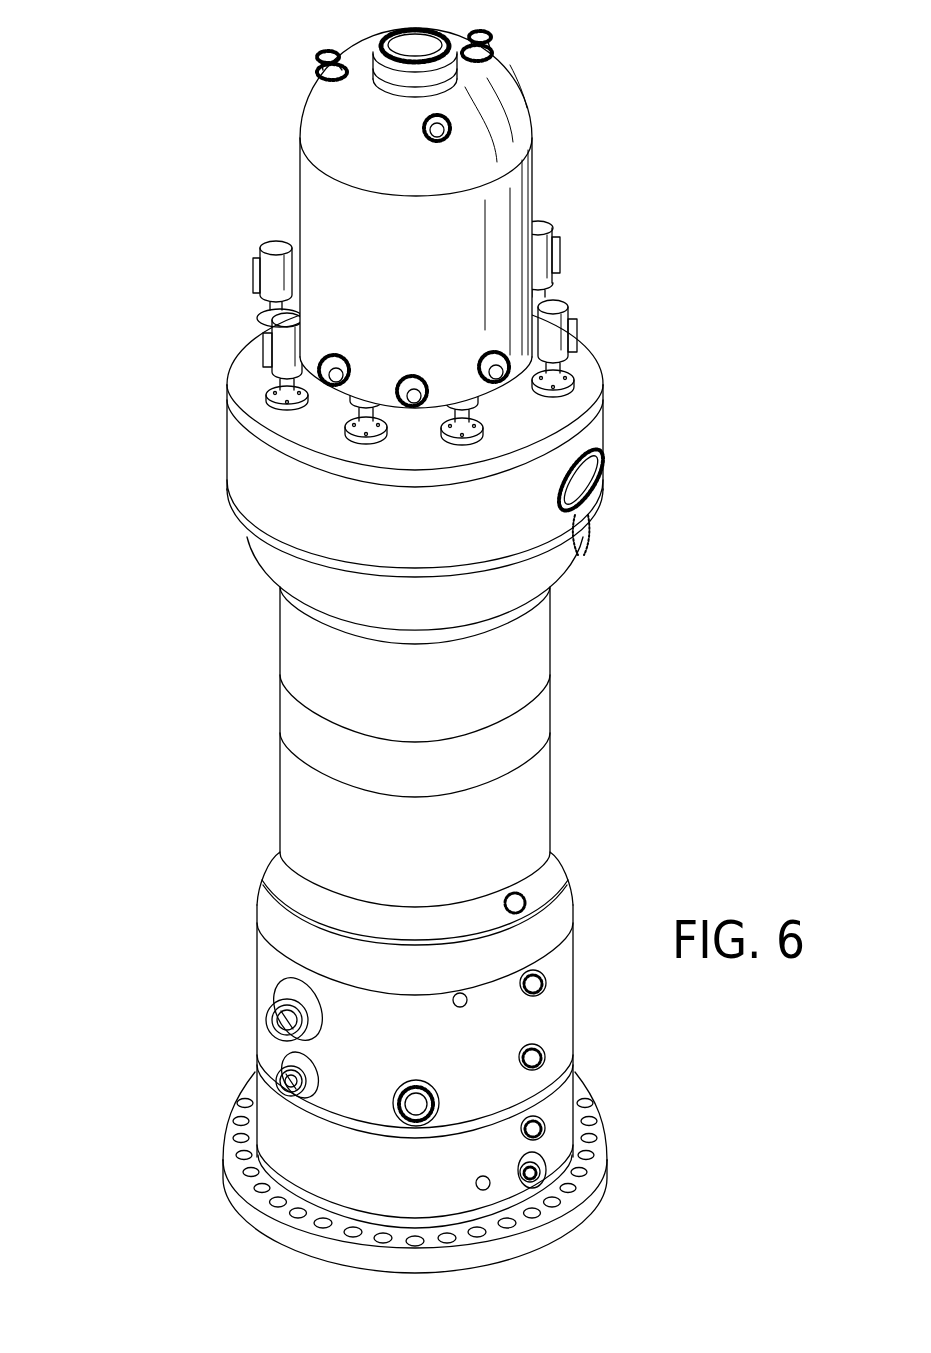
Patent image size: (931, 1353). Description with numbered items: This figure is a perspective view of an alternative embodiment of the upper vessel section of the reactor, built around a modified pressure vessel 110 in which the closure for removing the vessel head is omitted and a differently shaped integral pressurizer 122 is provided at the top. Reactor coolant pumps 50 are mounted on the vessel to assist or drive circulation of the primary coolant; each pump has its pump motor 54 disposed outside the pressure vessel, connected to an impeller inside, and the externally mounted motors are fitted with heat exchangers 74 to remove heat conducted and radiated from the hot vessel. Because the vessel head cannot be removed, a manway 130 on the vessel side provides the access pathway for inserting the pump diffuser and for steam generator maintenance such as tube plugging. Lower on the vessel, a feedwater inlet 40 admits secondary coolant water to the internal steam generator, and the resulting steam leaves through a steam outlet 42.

The reactor coolant pump 50 is at (263, 237).
The integral pressurizer 122 is at (312, 178).
The pump motor 54 is at (357, 427).
The heat exchanger 74 is at (578, 340).
The manway 130 is at (602, 495).
The modified pressure vessel 110 is at (322, 812).
The feedwater inlet 40 is at (285, 1097).
The steam outlet 42 is at (290, 1020).